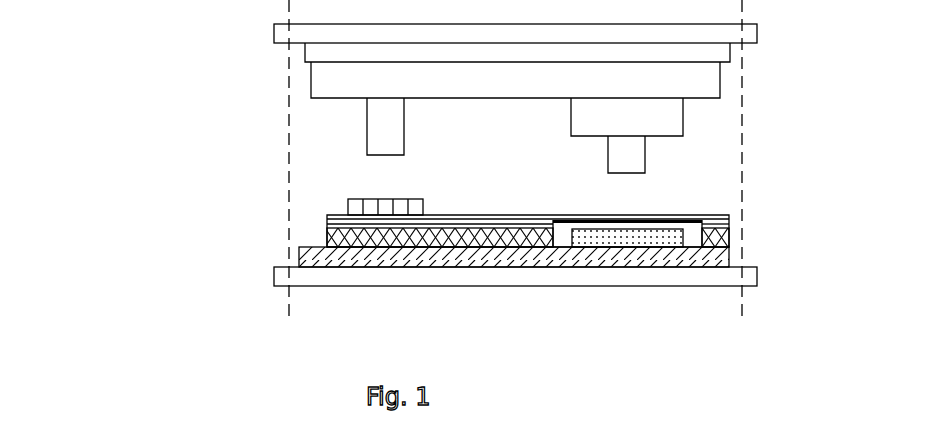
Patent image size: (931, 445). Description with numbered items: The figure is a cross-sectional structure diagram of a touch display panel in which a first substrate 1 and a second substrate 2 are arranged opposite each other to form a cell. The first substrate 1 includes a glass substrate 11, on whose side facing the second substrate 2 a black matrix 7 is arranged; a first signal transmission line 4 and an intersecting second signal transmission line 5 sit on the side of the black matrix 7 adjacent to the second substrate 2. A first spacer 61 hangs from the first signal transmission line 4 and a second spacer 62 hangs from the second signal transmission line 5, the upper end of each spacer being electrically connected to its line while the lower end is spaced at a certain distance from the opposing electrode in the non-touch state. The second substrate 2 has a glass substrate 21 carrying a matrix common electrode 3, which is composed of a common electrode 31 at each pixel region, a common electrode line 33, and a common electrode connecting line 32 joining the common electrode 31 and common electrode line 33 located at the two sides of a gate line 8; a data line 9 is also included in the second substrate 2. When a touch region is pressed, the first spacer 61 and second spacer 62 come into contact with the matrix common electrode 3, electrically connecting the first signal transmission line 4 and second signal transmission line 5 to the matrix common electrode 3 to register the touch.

The first substrate 1 is at (172, 21).
The second substrate 2 is at (125, 226).
The matrix common electrode 3 is at (207, 173).
The first signal transmission line 4 is at (693, 75).
The second signal transmission line 5 is at (645, 117).
The black matrix 7 is at (342, 50).
The gate line 8 is at (423, 255).
The data line 9 is at (627, 235).
The glass substrate 11 is at (708, 35).
The glass substrate 21 is at (718, 274).
The common electrode 31 is at (333, 240).
The common electrode connecting line 32 is at (395, 203).
The common electrode line 33 is at (333, 220).
The first spacer 61 is at (386, 137).
The second spacer 62 is at (626, 154).